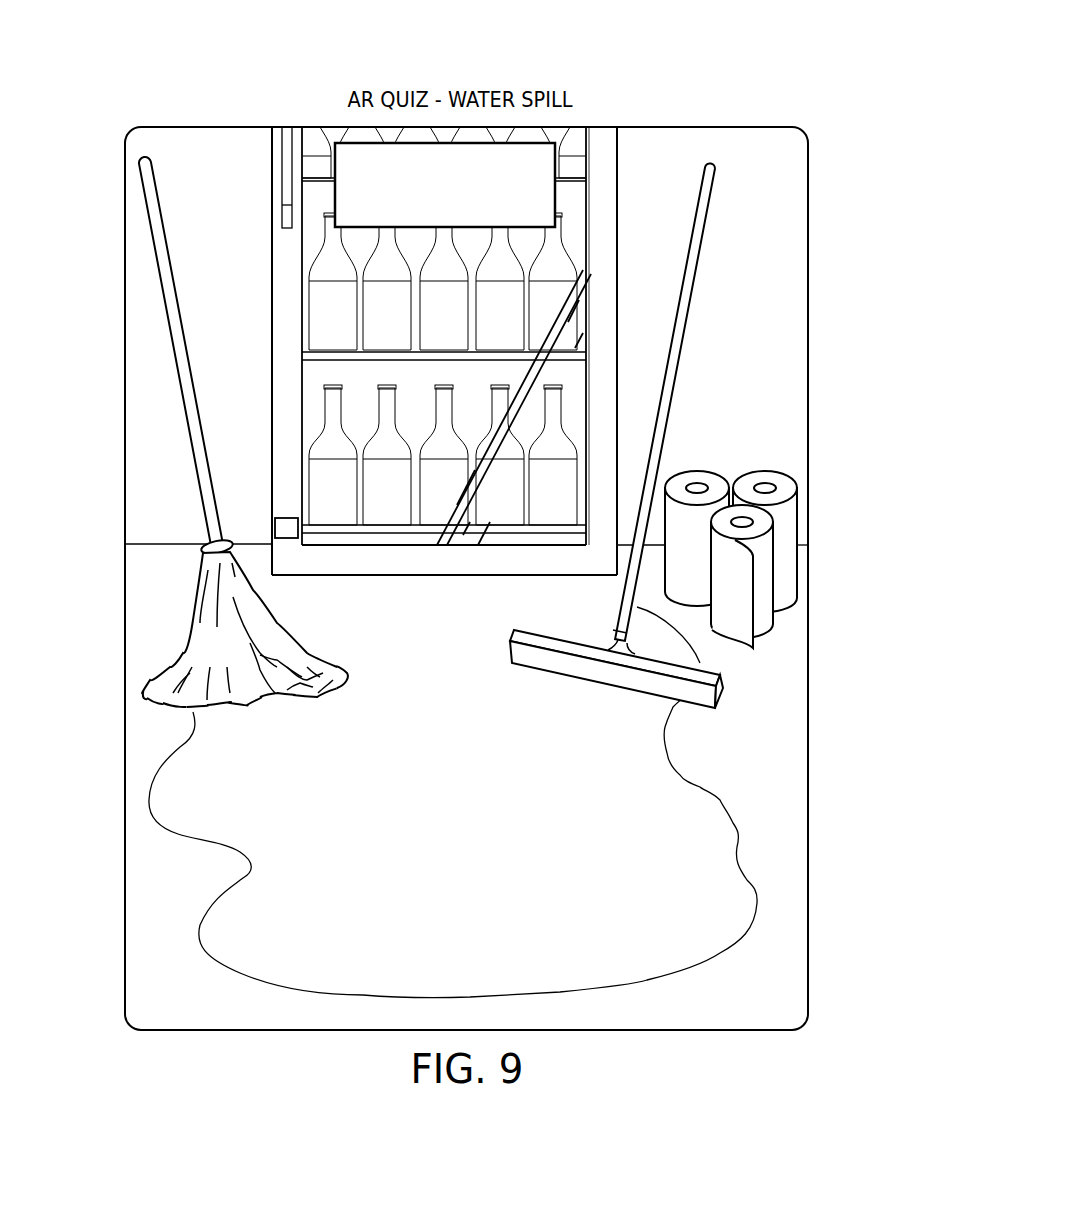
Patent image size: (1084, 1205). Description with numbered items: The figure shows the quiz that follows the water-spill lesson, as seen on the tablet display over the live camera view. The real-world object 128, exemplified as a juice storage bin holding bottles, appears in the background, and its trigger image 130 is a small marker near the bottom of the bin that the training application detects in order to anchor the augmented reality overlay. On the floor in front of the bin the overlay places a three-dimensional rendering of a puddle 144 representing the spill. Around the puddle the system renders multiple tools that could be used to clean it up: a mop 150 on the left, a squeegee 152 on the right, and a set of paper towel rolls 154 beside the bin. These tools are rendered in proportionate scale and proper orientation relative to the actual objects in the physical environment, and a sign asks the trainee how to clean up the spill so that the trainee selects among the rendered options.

The target image or object 128 is at (617, 194).
The trigger image 130 is at (288, 530).
The 3D rendering (puddle) 144 is at (712, 808).
The 3D rendered tool (mop) 150 is at (187, 352).
The 3D rendered tool (squeegee) 152 is at (712, 217).
The 3D rendered tool (paper towels) 154 is at (788, 523).